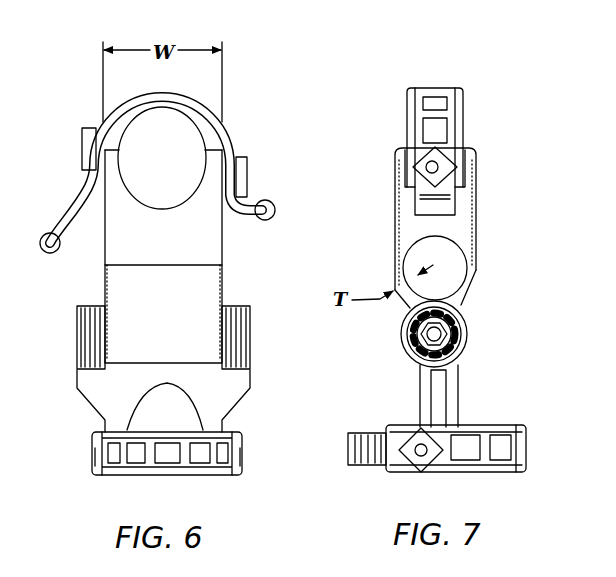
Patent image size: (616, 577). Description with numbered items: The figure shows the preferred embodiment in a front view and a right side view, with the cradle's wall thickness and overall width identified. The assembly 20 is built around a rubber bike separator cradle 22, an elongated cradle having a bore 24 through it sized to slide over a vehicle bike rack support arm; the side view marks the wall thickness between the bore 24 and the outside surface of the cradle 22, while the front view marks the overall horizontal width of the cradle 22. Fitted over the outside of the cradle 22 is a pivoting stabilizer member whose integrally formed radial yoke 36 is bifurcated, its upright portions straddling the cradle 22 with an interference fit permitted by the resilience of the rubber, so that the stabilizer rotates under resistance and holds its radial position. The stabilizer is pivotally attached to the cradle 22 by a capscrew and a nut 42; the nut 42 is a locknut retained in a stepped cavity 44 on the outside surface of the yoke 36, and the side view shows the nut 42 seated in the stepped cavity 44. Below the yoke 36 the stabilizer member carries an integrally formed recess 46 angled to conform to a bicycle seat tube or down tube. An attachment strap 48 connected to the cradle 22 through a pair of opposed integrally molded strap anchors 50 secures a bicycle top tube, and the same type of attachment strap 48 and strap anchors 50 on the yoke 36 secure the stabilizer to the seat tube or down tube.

In FIG. 6, the shower head holder assembly 20 is at (91, 102).
In FIG. 7, the shower head holder assembly 20 is at (449, 76).
In FIG. 6, the bike separator cradle 22 is at (226, 254).
In FIG. 7, the bike separator cradle 22 is at (478, 205).
In FIG. 7, the bore 24 is at (464, 282).
In FIG. 6, the radial yoke 36 is at (80, 376).
In FIG. 7, the radial yoke 36 is at (458, 398).
In FIG. 7, the nut 42 is at (466, 318).
In FIG. 7, the stepped cavity 44 is at (410, 346).
In FIG. 6, the recess 46 is at (127, 410).
In FIG. 6, the attachment strap 48 is at (226, 122).
In FIG. 7, the attachment strap 48 is at (407, 90).
In FIG. 6, the strap anchors 50 is at (85, 165).
In FIG. 7, the strap anchors 50 is at (440, 150).